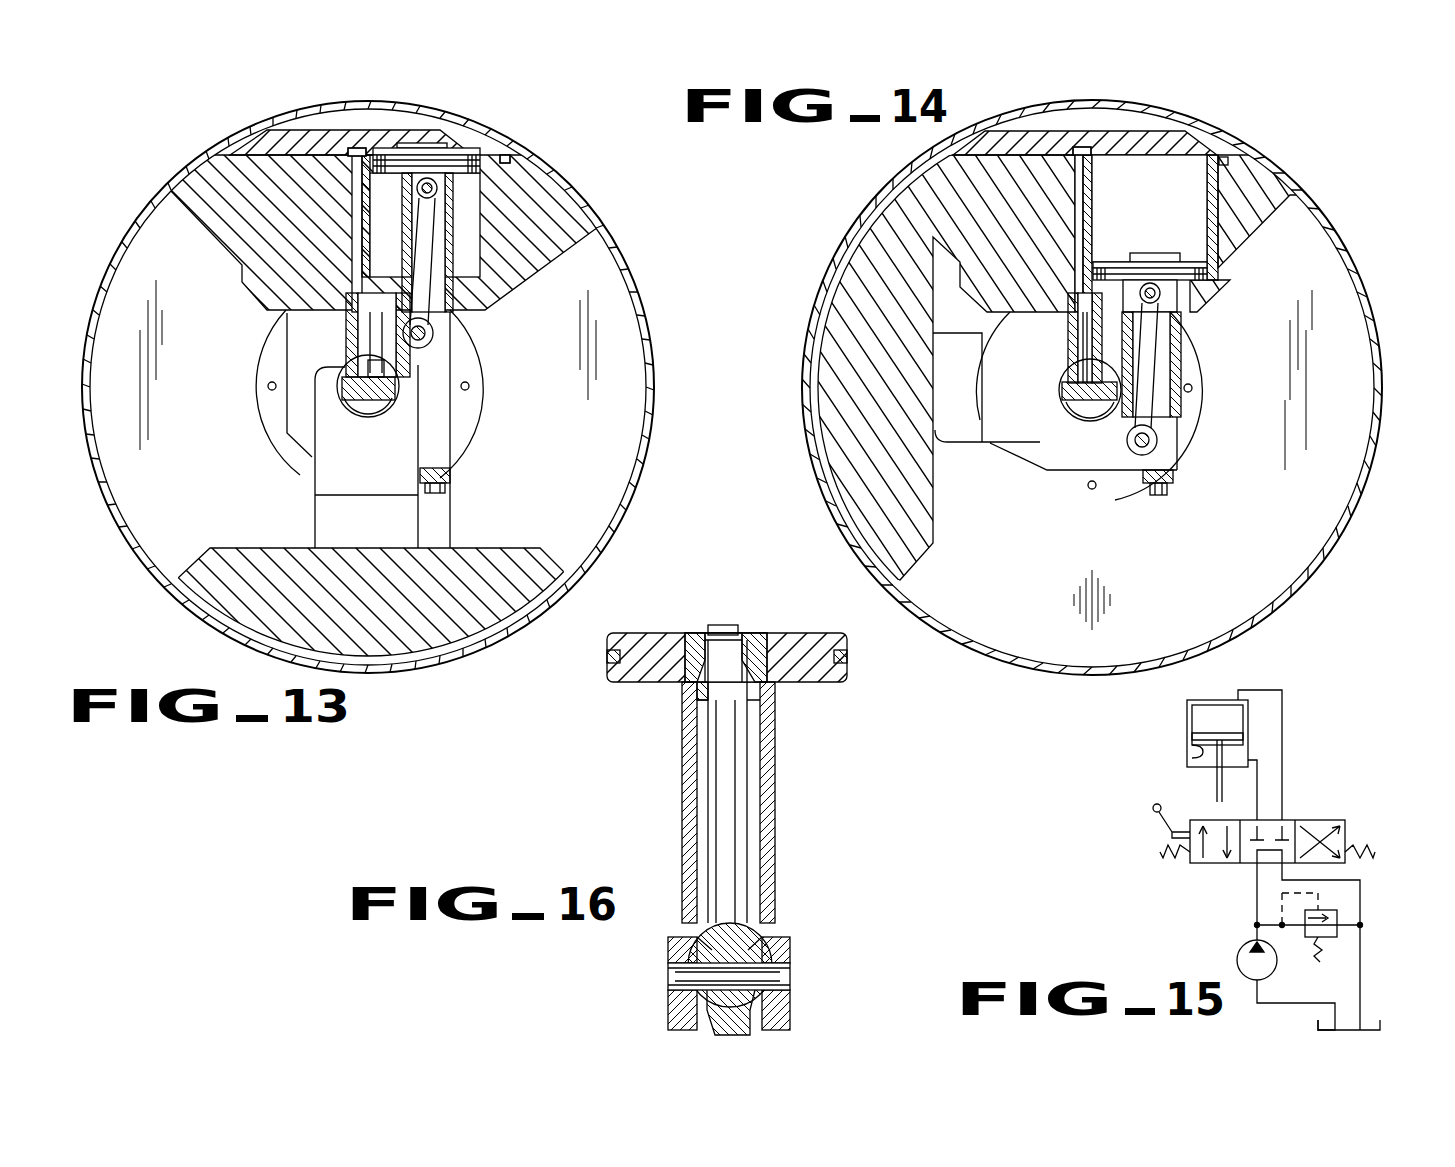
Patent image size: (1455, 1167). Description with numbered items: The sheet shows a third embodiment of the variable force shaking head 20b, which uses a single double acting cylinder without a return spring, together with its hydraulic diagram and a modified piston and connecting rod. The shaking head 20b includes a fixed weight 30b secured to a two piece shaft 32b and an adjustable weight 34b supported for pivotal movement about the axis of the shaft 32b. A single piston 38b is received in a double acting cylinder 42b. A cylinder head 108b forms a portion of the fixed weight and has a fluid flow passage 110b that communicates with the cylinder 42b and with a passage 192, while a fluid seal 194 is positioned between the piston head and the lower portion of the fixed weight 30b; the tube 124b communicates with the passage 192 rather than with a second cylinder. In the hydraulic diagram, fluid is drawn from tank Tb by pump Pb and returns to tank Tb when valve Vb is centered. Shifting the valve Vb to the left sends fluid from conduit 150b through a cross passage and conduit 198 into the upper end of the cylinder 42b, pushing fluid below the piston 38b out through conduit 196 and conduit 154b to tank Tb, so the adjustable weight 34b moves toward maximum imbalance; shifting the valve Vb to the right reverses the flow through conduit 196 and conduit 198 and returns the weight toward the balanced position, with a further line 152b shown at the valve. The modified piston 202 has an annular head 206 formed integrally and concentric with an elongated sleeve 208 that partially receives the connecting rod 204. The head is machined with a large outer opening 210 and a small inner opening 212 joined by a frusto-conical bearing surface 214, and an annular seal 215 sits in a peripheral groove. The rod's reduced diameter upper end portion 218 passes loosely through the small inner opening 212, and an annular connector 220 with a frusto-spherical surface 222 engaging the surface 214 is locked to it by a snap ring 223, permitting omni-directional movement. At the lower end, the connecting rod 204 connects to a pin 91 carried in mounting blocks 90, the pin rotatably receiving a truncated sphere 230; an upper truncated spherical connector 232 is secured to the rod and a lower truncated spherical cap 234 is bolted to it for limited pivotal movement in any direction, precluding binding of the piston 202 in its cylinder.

In FIG. 13, the variable force shaking head 20b is at (602, 184).
In FIG. 14, the variable force shaking head 20b is at (1278, 132).
In FIG. 13, the fixed weight 30b is at (188, 186).
In FIG. 14, the fixed weight 30b is at (925, 184).
In FIG. 13, the cylinder head 108b is at (262, 146).
In FIG. 14, the cylinder head 108b is at (978, 150).
In FIG. 13, the fluid flow passage 110b is at (345, 150).
In FIG. 14, the fluid flow passage 110b is at (1105, 150).
In FIG. 13, the piston 38b is at (478, 156).
In FIG. 14, the piston 38b is at (1212, 282).
In FIG. 15, the piston 38b is at (1195, 729).
In FIG. 13, the double acting cylinder 42b is at (468, 232).
In FIG. 14, the double acting cylinder 42b is at (1203, 228).
In FIG. 15, the double acting cylinder 42b is at (1192, 755).
In FIG. 13, the passage 192 is at (357, 264).
In FIG. 14, the passage 192 is at (1079, 202).
In FIG. 13, the fluid seal 194 is at (508, 168).
In FIG. 14, the fluid seal 194 is at (1230, 163).
In FIG. 13, the tube 124b is at (347, 326).
In FIG. 14, the tube 124b is at (1068, 352).
In FIG. 13, the two piece shaft 32b is at (364, 410).
In FIG. 14, the two piece shaft 32b is at (1082, 405).
In FIG. 13, the adjustable weight 34b is at (456, 538).
In FIG. 14, the adjustable weight 34b is at (940, 522).
In FIG. 16, the piston 202 is at (604, 688).
In FIG. 16, the connecting rod 204 is at (710, 808).
In FIG. 16, the annular head 206 is at (847, 680).
In FIG. 16, the elongated sleeve 208 is at (775, 806).
In FIG. 16, the large outer opening 210 is at (690, 636).
In FIG. 16, the small inner opening 212 is at (710, 700).
In FIG. 16, the frusto-conical bearing surface 214 is at (696, 676).
In FIG. 16, the annular seal 215 is at (847, 657).
In FIG. 16, the reduced diameter upper end portion 218 is at (725, 626).
In FIG. 16, the annular connector 220 is at (760, 642).
In FIG. 16, the frusto-spherical surface 222 is at (762, 686).
In FIG. 16, the snap ring 223 is at (712, 632).
In FIG. 16, the truncated sphere 230 is at (752, 956).
In FIG. 16, the upper truncated spherical connector 232 is at (752, 932).
In FIG. 16, the lower truncated spherical cap 234 is at (765, 1020).
In FIG. 16, the mounting block 90 is at (668, 950).
In FIG. 16, the pin 91 is at (668, 976).
In FIG. 15, the conduit 196 is at (1253, 787).
In FIG. 15, the conduit 198 is at (1283, 752).
In FIG. 15, the valve Vb is at (1305, 820).
In FIG. 15, the valve return line 152b is at (1254, 868).
In FIG. 15, the conduit 150b is at (1256, 912).
In FIG. 15, the conduit 154b is at (1362, 940).
In FIG. 15, the pump Pb is at (1237, 962).
In FIG. 15, the tank Tb is at (1380, 1012).